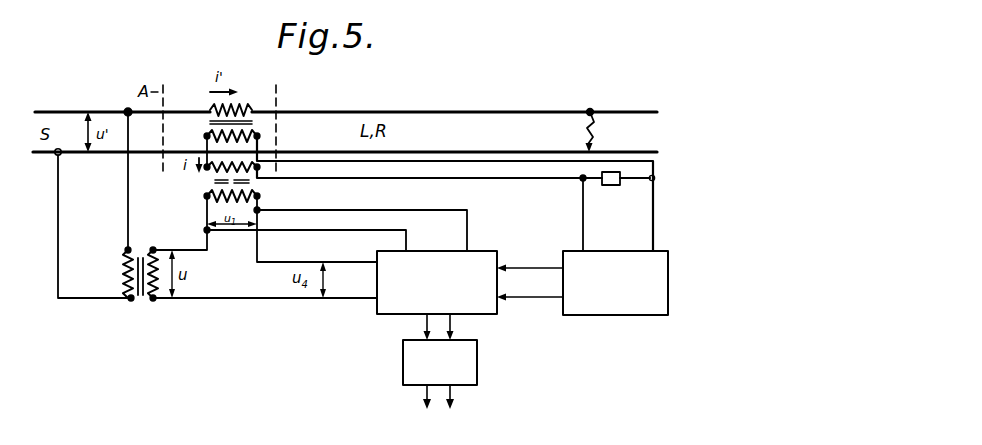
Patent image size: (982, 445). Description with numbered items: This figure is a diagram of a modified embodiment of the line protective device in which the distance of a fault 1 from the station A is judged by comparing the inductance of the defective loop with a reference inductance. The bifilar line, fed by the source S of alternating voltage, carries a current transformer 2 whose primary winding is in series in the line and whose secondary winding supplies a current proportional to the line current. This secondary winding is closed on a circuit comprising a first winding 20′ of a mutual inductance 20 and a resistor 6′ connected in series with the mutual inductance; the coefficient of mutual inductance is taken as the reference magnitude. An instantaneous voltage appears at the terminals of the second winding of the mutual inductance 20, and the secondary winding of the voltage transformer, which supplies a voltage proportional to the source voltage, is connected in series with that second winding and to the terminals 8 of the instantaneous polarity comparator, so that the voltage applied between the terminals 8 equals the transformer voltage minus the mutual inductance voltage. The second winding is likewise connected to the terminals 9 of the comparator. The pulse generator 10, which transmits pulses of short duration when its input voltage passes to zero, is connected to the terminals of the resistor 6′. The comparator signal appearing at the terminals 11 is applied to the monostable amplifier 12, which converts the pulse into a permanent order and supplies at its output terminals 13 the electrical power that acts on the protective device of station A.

The fault 1 is at (585, 131).
The current transformer 2 is at (212, 123).
The mutual inductance 20 is at (214, 182).
The first winding of the mutual inductance 20′ is at (230, 161).
The resistor 6′ is at (610, 184).
The terminals of the instantaneous polarity comparator 8 is at (383, 255).
The terminals of the instantaneous polarity comparator 9 is at (473, 260).
The pulse generator 10 is at (617, 298).
The terminals 11 is at (423, 328).
The monostable amplifier 12 is at (448, 372).
The output terminals 13 is at (438, 407).